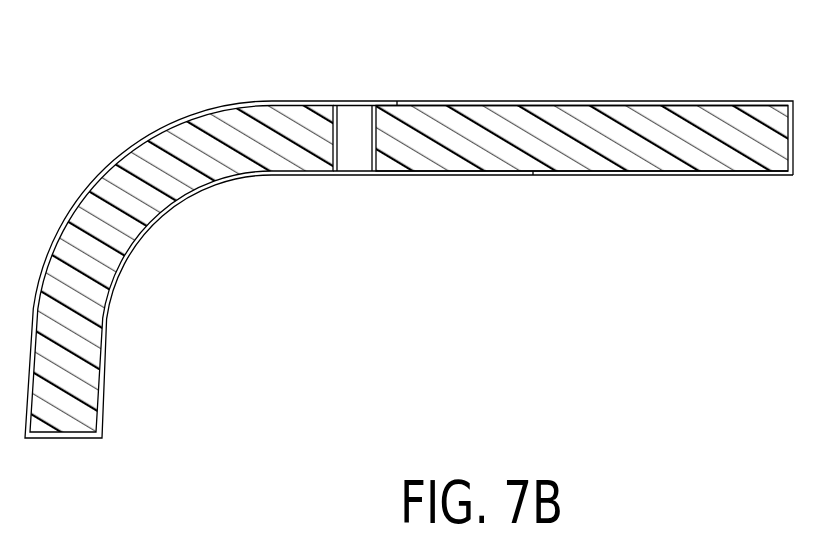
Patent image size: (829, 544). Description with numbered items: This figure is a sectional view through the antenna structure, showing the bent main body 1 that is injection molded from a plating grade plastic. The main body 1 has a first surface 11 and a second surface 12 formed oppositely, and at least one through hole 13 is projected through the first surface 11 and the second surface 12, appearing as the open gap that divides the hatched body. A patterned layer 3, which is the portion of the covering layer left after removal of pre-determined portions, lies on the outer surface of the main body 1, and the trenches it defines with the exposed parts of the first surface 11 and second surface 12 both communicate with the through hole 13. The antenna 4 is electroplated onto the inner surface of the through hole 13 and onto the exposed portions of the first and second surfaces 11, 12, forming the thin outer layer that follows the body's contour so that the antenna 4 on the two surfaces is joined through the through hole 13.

The main body 1 is at (748, 127).
The patterned layer 3 is at (598, 102).
The antenna 4 is at (173, 120).
The first surface 11 is at (682, 107).
The second surface 12 is at (668, 176).
The through hole 13 is at (355, 127).